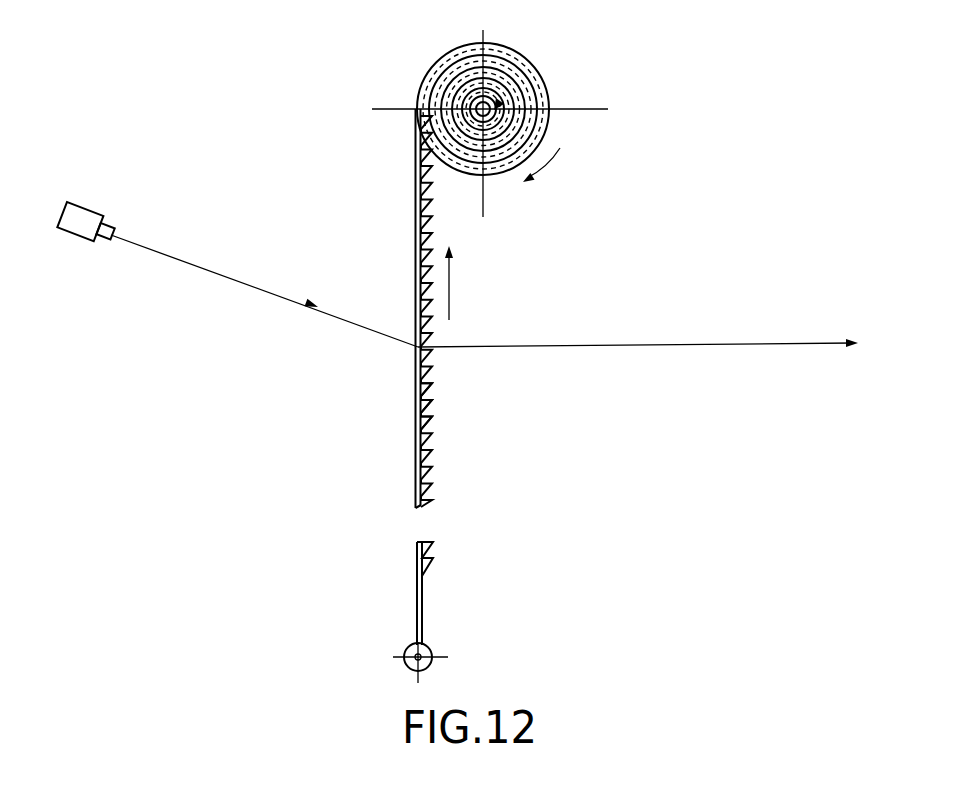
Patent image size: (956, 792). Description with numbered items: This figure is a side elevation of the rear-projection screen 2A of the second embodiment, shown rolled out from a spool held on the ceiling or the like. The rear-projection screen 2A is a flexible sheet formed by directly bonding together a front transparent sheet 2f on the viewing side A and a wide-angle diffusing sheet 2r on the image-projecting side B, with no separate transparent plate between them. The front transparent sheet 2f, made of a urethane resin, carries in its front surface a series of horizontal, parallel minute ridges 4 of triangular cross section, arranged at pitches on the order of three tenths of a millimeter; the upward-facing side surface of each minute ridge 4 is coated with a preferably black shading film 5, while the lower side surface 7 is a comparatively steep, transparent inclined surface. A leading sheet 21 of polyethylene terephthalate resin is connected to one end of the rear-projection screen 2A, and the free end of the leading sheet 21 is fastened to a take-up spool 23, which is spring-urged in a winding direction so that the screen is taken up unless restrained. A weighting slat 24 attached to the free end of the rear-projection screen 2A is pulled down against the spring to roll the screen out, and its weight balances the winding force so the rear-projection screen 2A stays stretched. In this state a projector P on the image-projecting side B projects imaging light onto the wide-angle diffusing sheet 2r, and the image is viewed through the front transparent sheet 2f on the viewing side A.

The leading sheet 21 is at (476, 125).
The take-up spool 23 is at (478, 122).
The rear-projection screen 2A is at (543, 206).
The wide-angle diffusing sheet 2r is at (418, 391).
The front transparent sheet 2f is at (432, 465).
The minute ridge 4 is at (432, 425).
The shading film 5 is at (431, 394).
The lower side surface 7 is at (433, 408).
The weighting slat 24 is at (431, 648).
The projector P is at (78, 230).
The viewing side A is at (792, 449).
The image-projecting side B is at (197, 452).